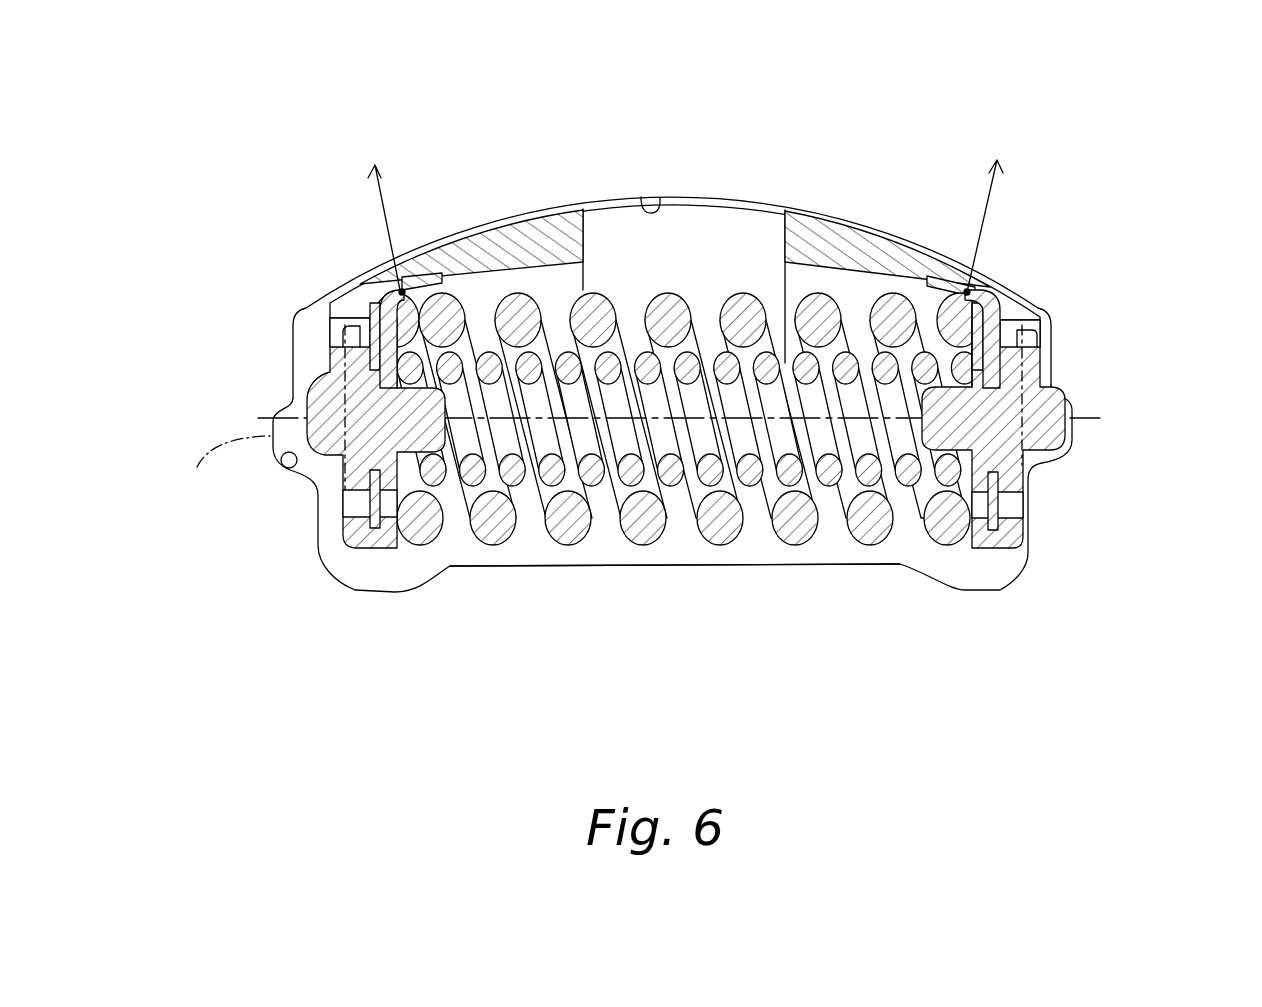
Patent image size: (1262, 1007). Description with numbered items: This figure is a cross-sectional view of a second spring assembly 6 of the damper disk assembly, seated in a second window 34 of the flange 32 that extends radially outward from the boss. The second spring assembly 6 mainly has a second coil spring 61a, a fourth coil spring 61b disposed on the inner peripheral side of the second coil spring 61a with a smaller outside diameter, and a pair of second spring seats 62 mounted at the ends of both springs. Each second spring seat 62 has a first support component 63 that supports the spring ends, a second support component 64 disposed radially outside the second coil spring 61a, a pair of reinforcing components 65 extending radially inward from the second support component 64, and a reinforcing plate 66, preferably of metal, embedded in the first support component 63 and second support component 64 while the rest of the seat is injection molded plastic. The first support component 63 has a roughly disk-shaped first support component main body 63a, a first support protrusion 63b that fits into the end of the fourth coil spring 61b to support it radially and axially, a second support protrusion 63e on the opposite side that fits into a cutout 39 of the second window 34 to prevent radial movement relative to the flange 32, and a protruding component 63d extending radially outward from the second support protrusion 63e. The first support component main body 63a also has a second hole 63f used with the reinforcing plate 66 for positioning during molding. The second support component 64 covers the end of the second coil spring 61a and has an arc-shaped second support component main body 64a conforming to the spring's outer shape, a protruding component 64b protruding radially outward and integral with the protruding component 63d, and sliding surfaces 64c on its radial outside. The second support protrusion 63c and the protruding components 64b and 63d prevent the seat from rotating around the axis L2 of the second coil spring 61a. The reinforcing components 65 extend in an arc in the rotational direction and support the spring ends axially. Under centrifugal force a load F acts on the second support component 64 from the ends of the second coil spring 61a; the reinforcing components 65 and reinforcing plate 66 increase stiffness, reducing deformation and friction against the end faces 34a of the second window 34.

The second spring assembly 6 is at (739, 229).
The flange 32 is at (657, 590).
The second window 34 is at (770, 203).
The end face of the second window 34a is at (641, 185).
The cutout 39 is at (278, 468).
The second coil spring 61a is at (678, 312).
The fourth coil spring 61b is at (673, 297).
The second spring seat 62 is at (349, 259).
The first support component 63 is at (718, 423).
The first support component main body 63a is at (330, 392).
The first support protrusion 63b is at (424, 440).
The second support protrusion 63c is at (365, 413).
The protruding component 63d is at (375, 366).
The second support protrusion 63e is at (362, 330).
The second hole 63f is at (370, 515).
The second support component 64 is at (459, 222).
The second support component main body 64a is at (520, 285).
The protruding component 64b is at (560, 240).
The sliding surface 64c is at (560, 238).
The reinforcing component 65 is at (472, 262).
The reinforcing plate 66 is at (351, 307).
The axis of the second coil spring L2 is at (225, 467).
The load F is at (681, 226).